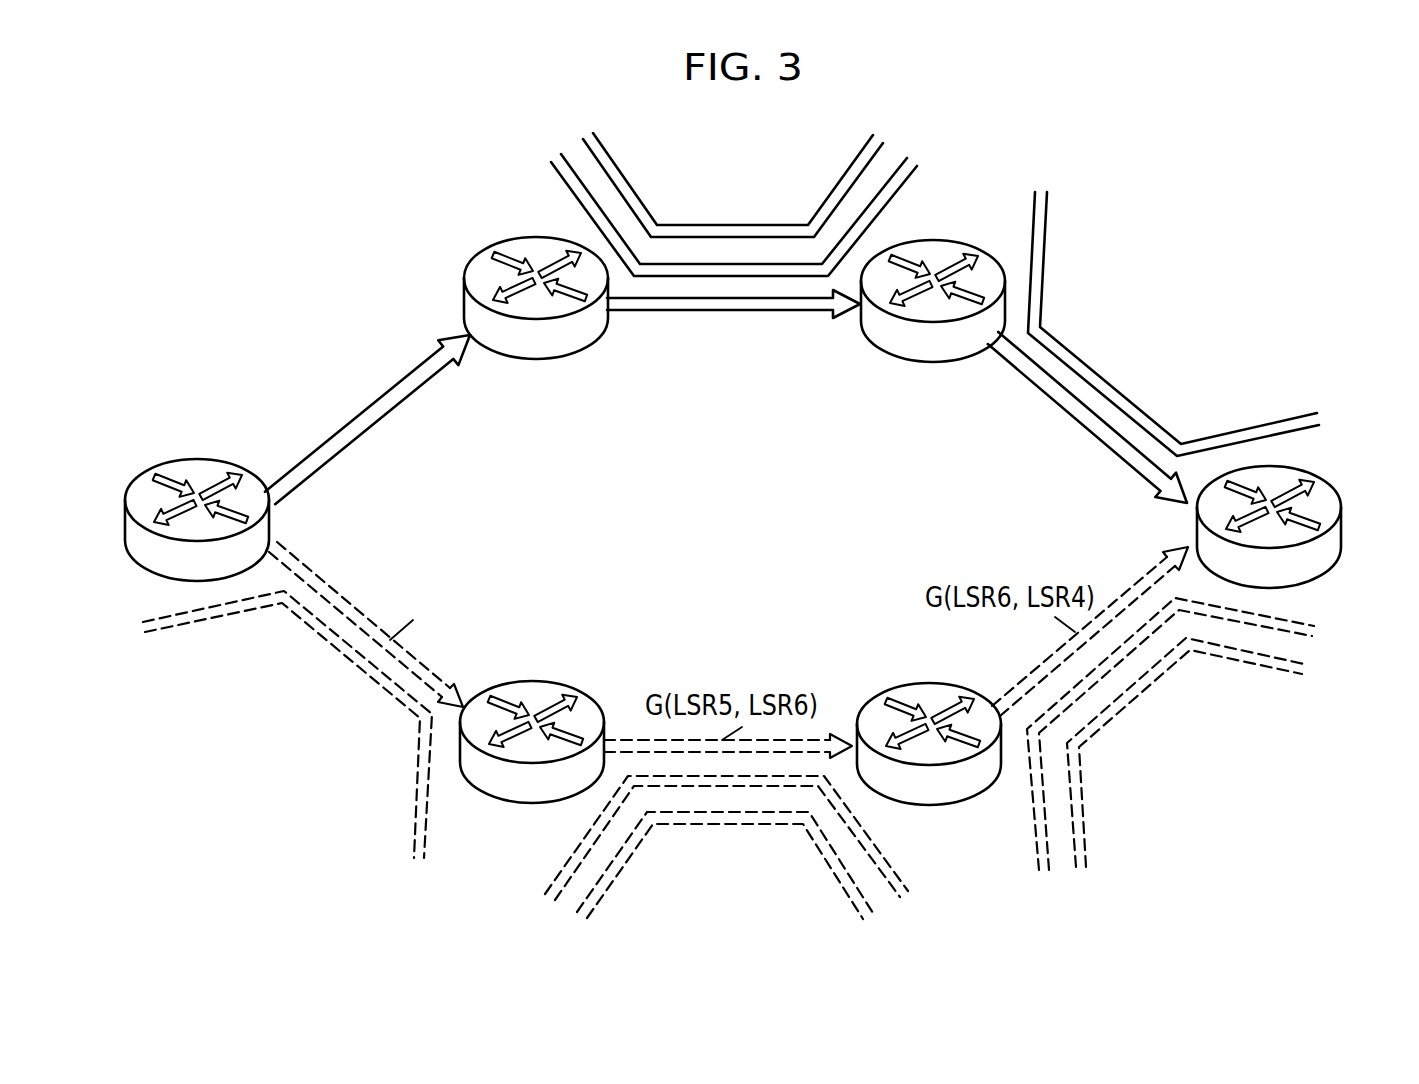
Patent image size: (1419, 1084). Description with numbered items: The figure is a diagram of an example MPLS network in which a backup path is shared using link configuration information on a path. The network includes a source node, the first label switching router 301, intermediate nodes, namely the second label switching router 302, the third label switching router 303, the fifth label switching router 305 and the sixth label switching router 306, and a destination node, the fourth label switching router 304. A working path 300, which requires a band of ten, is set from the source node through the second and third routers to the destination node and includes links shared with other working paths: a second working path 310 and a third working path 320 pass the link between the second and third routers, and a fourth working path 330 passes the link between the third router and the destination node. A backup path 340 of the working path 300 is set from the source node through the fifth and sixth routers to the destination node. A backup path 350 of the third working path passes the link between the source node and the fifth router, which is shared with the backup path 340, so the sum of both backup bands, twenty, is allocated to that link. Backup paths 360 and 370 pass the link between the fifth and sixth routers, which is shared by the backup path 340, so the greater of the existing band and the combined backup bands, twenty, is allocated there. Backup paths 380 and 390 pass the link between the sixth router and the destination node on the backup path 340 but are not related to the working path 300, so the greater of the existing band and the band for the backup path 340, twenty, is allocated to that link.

The label switching router LSR1 301 is at (200, 460).
The label switching router LSR2 302 is at (473, 258).
The label switching router LSR3 303 is at (933, 240).
The label switching router LSR4 304 is at (1307, 470).
The label switching router LSR5 305 is at (540, 678).
The label switching router LSR6 306 is at (933, 680).
The working path L1 300 is at (365, 412).
The working path L2 310 is at (563, 180).
The working path L3 320 is at (612, 157).
The working path L4 330 is at (1047, 257).
The backup path L1b 340 is at (330, 552).
The backup path L3b 350 is at (223, 640).
The backup path L4b 360 is at (573, 847).
The backup path L10b 370 is at (627, 860).
The backup path L11b 380 is at (1033, 815).
The backup path L12b 390 is at (1083, 817).